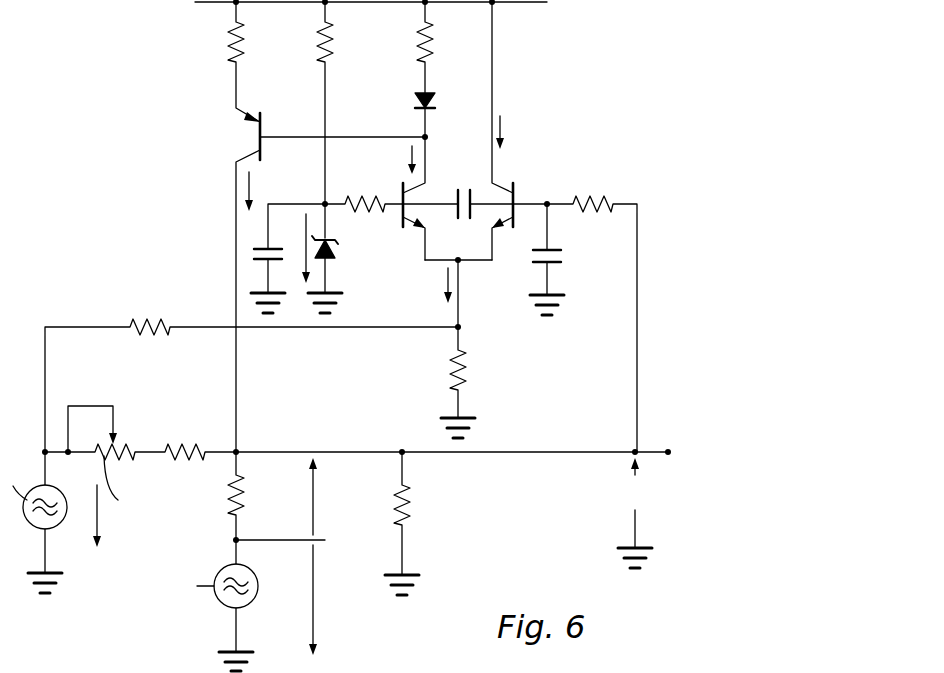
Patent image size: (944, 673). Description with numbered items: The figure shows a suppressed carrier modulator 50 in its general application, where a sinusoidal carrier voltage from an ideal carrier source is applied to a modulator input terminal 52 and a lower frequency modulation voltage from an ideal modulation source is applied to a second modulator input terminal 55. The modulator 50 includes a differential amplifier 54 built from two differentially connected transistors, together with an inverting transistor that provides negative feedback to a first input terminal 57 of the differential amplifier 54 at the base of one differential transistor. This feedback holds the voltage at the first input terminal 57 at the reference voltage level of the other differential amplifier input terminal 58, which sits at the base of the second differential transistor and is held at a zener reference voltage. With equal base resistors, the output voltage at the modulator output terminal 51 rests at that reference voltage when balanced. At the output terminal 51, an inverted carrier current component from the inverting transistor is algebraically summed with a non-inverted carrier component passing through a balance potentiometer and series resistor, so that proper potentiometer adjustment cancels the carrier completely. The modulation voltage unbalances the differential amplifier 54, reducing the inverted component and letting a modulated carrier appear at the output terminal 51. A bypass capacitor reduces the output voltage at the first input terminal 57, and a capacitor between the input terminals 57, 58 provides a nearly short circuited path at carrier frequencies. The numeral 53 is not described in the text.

The suppressed carrier modulator 50 is at (122, 181).
The modulator output terminal 51 is at (668, 452).
The modulator input terminal 52 is at (45, 452).
The junction of diode D1 and base of Q3 53 is at (425, 137).
The differential amplifier 54 is at (478, 112).
The modulator input terminal 55 is at (236, 540).
The first input terminal of differential amplifier 57 is at (547, 204).
The differential amplifier input terminal 58 is at (400, 211).